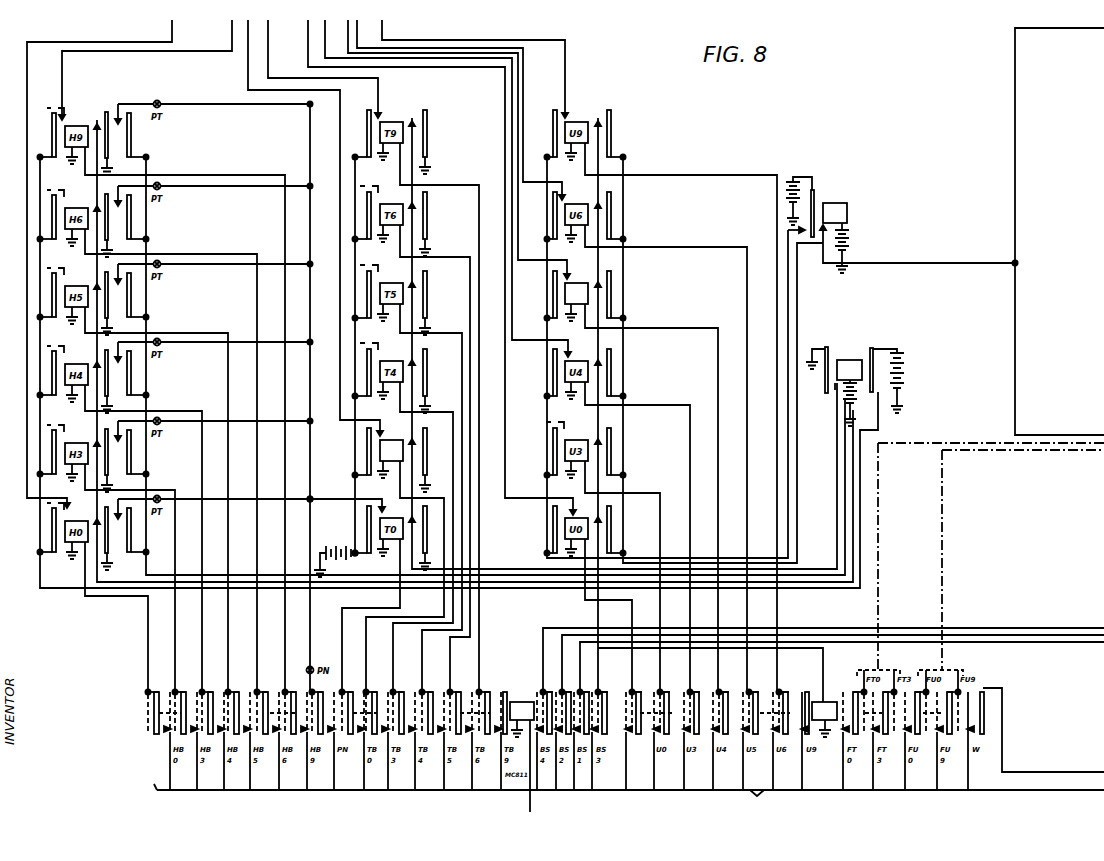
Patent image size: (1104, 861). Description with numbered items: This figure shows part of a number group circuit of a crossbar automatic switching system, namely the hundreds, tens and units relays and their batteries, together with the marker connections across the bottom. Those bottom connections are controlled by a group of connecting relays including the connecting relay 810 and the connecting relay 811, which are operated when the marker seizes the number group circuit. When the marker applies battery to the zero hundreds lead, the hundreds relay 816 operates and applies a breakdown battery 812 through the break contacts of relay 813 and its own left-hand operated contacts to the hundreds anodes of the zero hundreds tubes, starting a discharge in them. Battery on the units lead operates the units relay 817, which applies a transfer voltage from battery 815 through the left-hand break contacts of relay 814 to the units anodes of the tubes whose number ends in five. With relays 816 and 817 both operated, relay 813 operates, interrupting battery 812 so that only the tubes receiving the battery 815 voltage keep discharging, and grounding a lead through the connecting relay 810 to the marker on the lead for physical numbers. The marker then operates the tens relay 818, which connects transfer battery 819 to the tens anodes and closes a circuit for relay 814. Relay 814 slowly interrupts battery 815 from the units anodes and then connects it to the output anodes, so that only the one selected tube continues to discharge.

The connecting relay MCA BOT 810 is at (523, 700).
The connecting relay MCA TOP 811 is at (829, 700).
The breakdown battery 812 is at (908, 371).
The relay 813 is at (849, 359).
The relay AT 814 is at (839, 203).
The transfer battery 815 is at (808, 184).
The hundreds relay H0 816 is at (93, 593).
The units relay U5 817 is at (585, 281).
The tens relay T3 818 is at (393, 438).
The transfer battery 819 is at (342, 545).